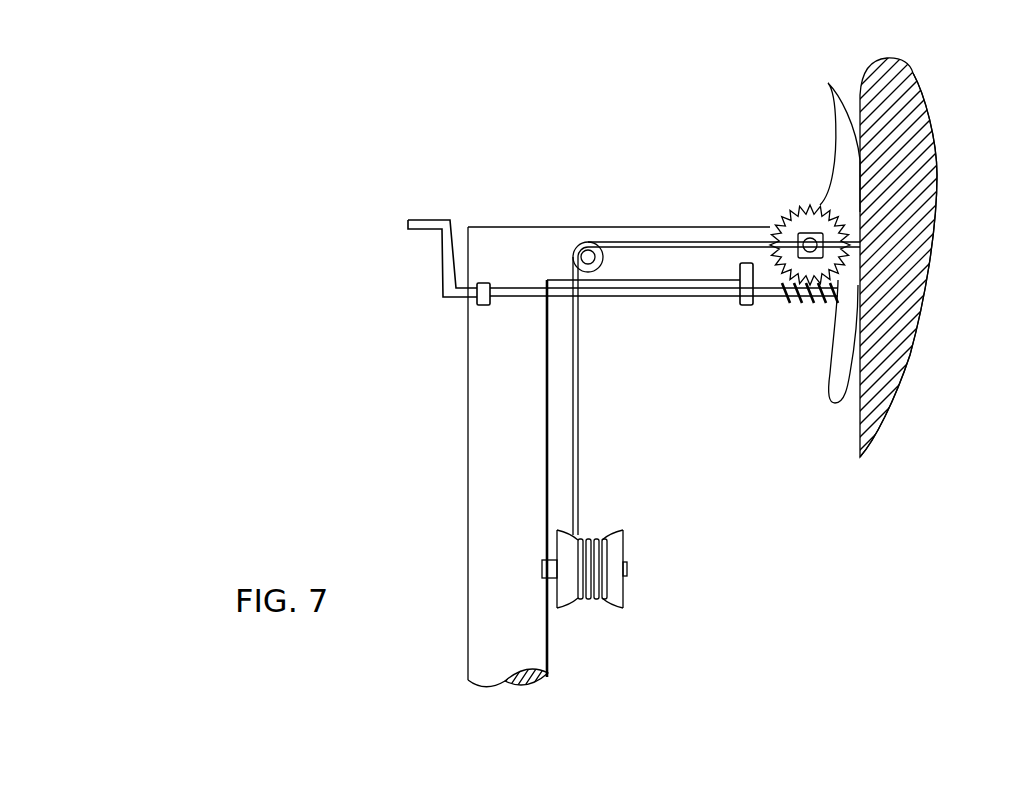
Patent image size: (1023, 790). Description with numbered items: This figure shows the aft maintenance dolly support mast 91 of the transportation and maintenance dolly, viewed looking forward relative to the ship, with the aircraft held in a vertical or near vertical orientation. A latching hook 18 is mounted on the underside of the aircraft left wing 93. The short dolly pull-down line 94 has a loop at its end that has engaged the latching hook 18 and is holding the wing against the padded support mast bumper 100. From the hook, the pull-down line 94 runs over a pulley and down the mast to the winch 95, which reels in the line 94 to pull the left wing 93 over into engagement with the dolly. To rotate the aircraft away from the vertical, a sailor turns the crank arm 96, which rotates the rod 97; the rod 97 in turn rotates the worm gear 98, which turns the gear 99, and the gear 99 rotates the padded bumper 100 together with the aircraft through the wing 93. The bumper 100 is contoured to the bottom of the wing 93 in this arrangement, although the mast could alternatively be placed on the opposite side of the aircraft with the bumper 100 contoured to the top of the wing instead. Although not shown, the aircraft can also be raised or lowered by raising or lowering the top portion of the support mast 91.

The latching hook 18 is at (905, 215).
The aft maintenance dolly support mast 91 is at (468, 469).
The left wing 93 is at (910, 355).
The pull-down line 94 is at (620, 230).
The winch 95 is at (628, 570).
The crank arm 96 is at (432, 221).
The rod 97 is at (613, 298).
The worm gear 98 is at (808, 306).
The gear 99 is at (778, 213).
The padded bumper 100 is at (832, 180).